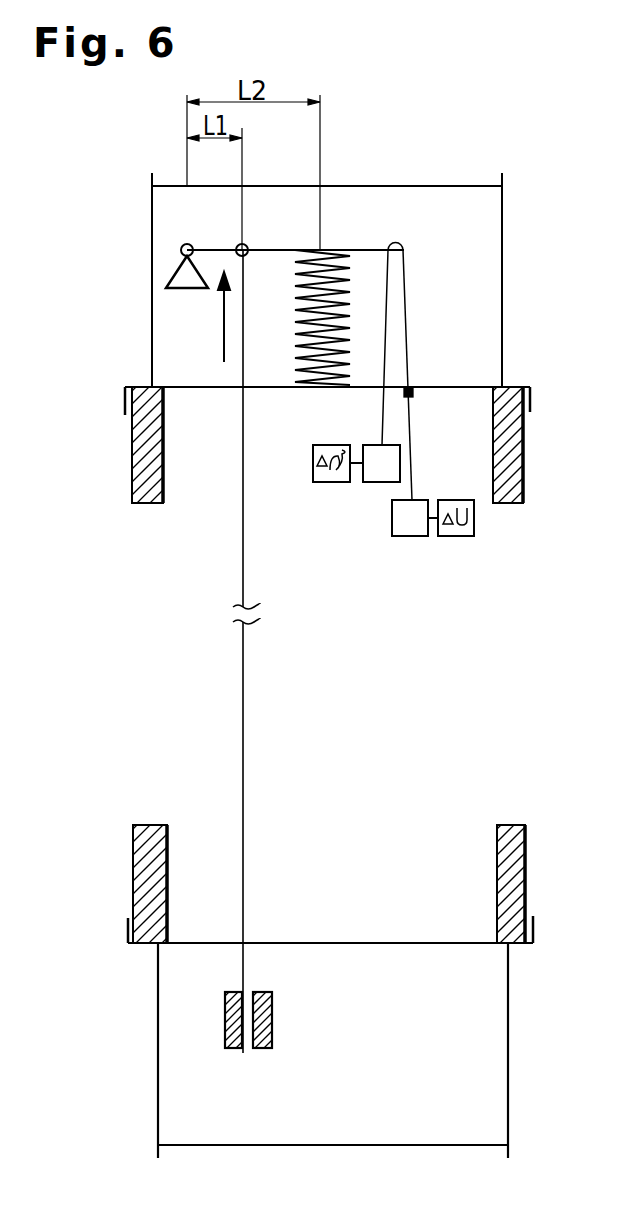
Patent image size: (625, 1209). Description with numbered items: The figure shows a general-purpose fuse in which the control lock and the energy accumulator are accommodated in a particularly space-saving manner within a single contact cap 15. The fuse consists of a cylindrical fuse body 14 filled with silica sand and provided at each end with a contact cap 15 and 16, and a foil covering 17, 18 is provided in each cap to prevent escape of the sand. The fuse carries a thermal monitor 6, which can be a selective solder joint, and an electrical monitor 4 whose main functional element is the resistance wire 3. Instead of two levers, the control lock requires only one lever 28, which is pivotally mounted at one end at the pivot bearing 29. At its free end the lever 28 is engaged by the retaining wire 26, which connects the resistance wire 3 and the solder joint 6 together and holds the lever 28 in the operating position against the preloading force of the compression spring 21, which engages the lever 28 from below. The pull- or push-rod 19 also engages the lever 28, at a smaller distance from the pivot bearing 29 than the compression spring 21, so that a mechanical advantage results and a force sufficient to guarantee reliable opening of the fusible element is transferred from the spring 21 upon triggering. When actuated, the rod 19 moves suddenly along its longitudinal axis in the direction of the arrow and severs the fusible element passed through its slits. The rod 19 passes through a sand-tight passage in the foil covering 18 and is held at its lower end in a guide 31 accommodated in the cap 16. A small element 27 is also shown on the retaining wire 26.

The resistance wire 3 is at (415, 450).
The electrical monitor 4 is at (418, 536).
The thermal monitor 6 is at (373, 482).
The fuse body 14 is at (515, 453).
The contact cap 15 is at (443, 190).
The contact cap 16 is at (487, 1094).
The foil covering 17 is at (207, 389).
The foil covering 18 is at (425, 942).
The pull- or push-rod 19 is at (243, 755).
The compression spring 21 is at (303, 324).
The retaining wire 26 is at (405, 280).
The sensor element 27 is at (413, 390).
The lever 28 is at (365, 250).
The pivot bearing 29 is at (181, 250).
The guide 31 is at (266, 1012).